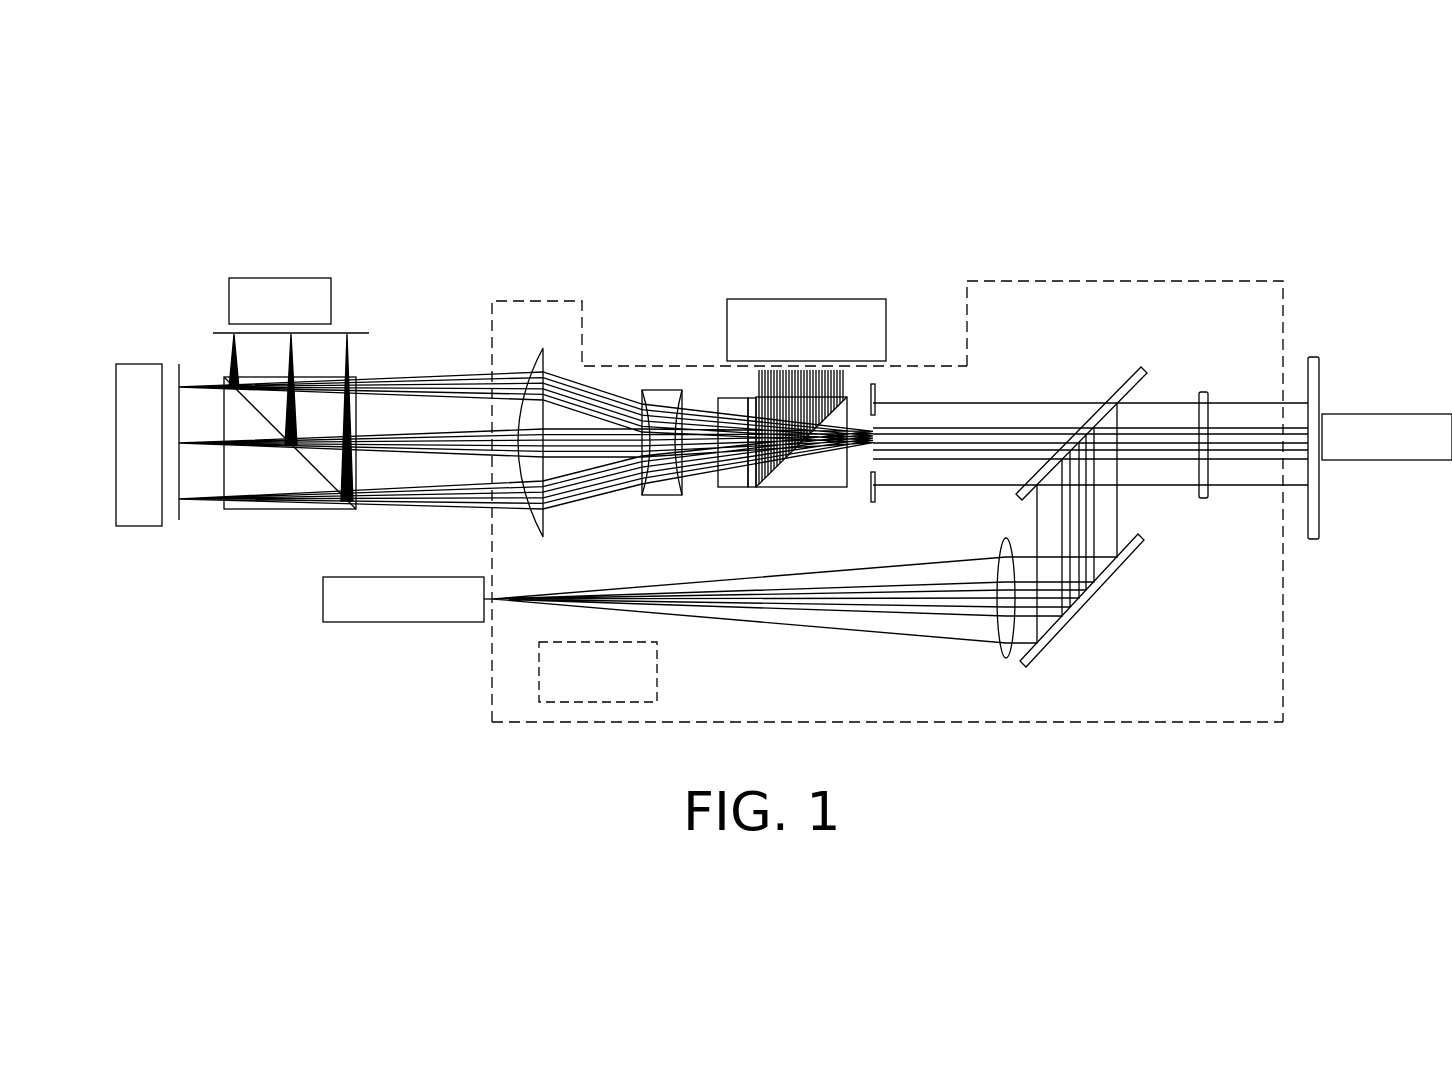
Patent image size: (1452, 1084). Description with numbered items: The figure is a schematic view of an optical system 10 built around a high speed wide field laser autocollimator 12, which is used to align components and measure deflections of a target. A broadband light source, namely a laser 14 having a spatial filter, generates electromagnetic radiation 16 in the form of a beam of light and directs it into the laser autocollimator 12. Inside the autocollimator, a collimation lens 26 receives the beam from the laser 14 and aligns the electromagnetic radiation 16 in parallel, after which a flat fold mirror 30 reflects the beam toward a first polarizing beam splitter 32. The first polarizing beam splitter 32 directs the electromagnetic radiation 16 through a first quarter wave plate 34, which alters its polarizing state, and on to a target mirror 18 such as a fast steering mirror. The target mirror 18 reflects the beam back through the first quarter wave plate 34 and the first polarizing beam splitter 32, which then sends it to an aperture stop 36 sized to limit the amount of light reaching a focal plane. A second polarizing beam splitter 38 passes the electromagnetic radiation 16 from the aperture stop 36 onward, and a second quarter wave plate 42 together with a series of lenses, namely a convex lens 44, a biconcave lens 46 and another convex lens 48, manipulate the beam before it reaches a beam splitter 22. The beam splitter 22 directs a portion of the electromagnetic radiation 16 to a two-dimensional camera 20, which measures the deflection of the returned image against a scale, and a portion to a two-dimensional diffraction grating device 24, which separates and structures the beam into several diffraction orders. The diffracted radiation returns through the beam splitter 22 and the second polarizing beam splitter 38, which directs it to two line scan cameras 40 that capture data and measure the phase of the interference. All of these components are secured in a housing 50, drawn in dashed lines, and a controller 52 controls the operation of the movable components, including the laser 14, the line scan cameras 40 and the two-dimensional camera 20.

The optical system 10 is at (925, 245).
The laser autocollimator 12 is at (585, 742).
The laser 14 is at (420, 622).
The electromagnetic radiation 16 is at (884, 602).
The target mirror 18 is at (1358, 414).
The two-dimensional camera 20 is at (132, 364).
The beam splitter 22 is at (290, 509).
The two-dimensional diffraction grating device 24 is at (262, 278).
The collimation lens 26 is at (996, 603).
The fold mirror 30 is at (1106, 583).
The first polarizing beam splitter 32 is at (1118, 388).
The first quarter wave plate 34 is at (1209, 397).
The aperture stop 36 is at (876, 397).
The second polarizing beam splitter 38 is at (848, 470).
The line scan cameras 40 is at (778, 299).
The second quarter wave plate 42 is at (751, 478).
The convex lens 44 is at (718, 399).
The biconcave lens 46 is at (642, 392).
The convex lens 48 is at (535, 372).
The housing 50 is at (1105, 281).
The controller 52 is at (658, 658).